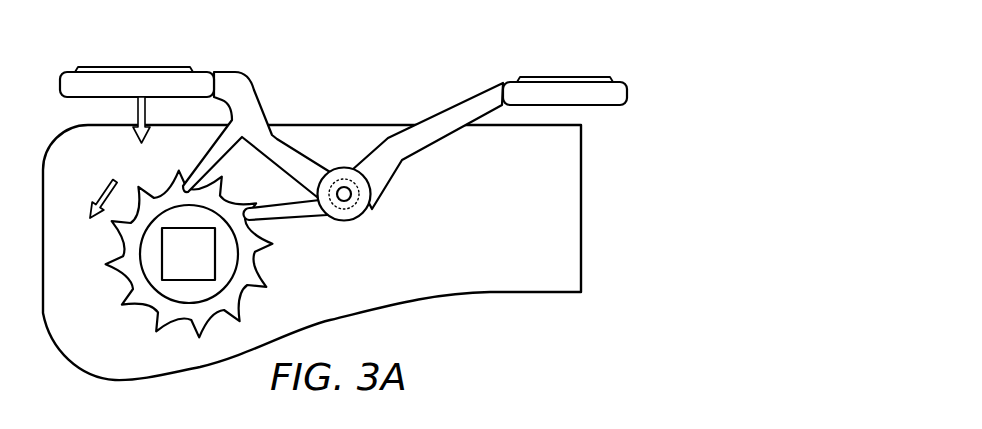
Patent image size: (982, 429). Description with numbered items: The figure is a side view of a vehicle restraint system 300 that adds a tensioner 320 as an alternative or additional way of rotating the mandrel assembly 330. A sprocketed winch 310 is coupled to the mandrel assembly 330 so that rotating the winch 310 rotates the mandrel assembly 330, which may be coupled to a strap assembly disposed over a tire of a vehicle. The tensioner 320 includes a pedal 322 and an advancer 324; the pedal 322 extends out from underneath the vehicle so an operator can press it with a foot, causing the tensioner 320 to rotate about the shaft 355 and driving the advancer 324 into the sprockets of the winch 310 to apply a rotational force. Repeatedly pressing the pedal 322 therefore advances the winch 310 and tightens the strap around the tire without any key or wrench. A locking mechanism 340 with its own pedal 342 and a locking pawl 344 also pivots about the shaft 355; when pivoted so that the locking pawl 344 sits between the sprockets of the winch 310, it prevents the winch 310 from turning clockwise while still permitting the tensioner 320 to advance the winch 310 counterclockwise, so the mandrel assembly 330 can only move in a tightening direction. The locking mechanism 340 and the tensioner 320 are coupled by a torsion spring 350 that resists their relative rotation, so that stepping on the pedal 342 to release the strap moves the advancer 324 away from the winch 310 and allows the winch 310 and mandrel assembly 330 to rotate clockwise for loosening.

The vehicle restraint system 300 is at (441, 34).
The winch 310 is at (123, 275).
The tensioner 320 is at (248, 78).
The pedal 322 is at (130, 68).
The advancer 324 is at (205, 148).
The mandrel assembly 330 is at (212, 285).
The locking mechanism 340 is at (460, 110).
The pedal 342 is at (560, 77).
The locking pawl 344 is at (283, 212).
The torsion spring 350 is at (366, 176).
The shaft 355 is at (357, 207).